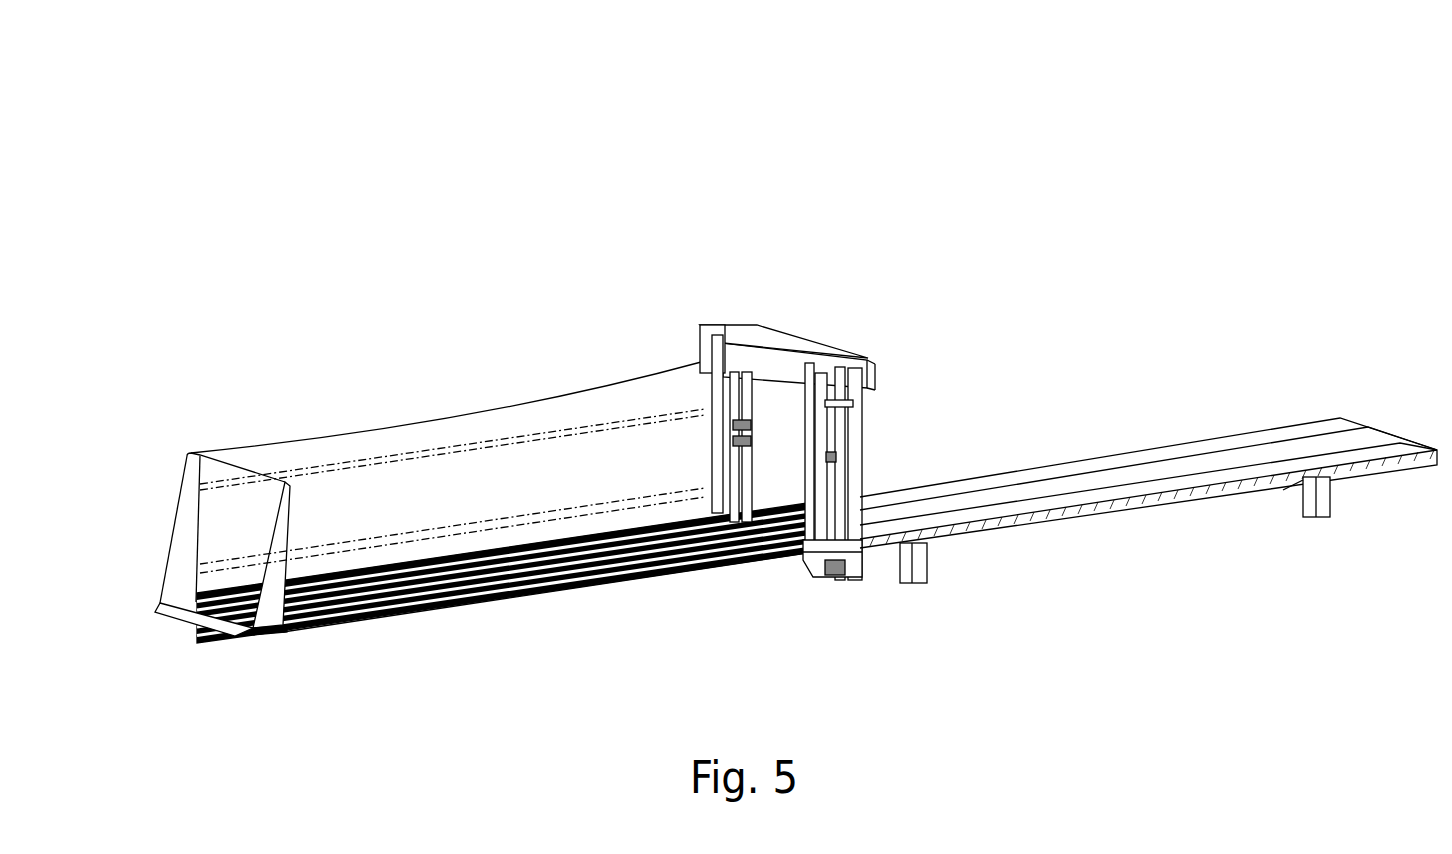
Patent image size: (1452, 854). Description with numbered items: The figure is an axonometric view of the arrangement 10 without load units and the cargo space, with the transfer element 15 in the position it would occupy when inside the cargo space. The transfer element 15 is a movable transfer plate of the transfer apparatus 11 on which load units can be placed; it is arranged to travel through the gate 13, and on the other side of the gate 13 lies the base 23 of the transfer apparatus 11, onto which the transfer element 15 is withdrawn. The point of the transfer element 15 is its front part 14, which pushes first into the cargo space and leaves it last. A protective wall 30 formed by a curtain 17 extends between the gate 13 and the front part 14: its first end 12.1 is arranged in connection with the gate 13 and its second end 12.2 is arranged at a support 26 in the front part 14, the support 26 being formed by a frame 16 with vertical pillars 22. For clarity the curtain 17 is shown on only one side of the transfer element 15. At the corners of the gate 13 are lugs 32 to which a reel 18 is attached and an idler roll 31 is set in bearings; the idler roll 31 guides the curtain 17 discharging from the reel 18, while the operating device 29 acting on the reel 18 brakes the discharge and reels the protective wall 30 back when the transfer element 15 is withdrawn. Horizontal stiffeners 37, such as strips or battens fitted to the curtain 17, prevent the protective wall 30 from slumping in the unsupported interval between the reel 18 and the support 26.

The arrangement 10 is at (633, 157).
The transfer apparatus 11 is at (405, 645).
The first end of the protective wall 12.1 is at (688, 338).
The second end of the protective wall 12.2 is at (188, 447).
The gate 13 is at (822, 292).
The front part 14 is at (237, 652).
The transfer element 15 is at (690, 565).
The frame 16 is at (277, 457).
The curtain 17 is at (462, 413).
The reel 18 is at (712, 378).
The vertical pillars 22 is at (182, 562).
The base 23 is at (1155, 530).
The support 26 is at (170, 505).
The operating device 29 is at (840, 590).
The protective wall 30 is at (390, 423).
The idler roll 31 is at (745, 372).
The lugs 32 is at (717, 327).
The stiffeners 37 is at (420, 460).